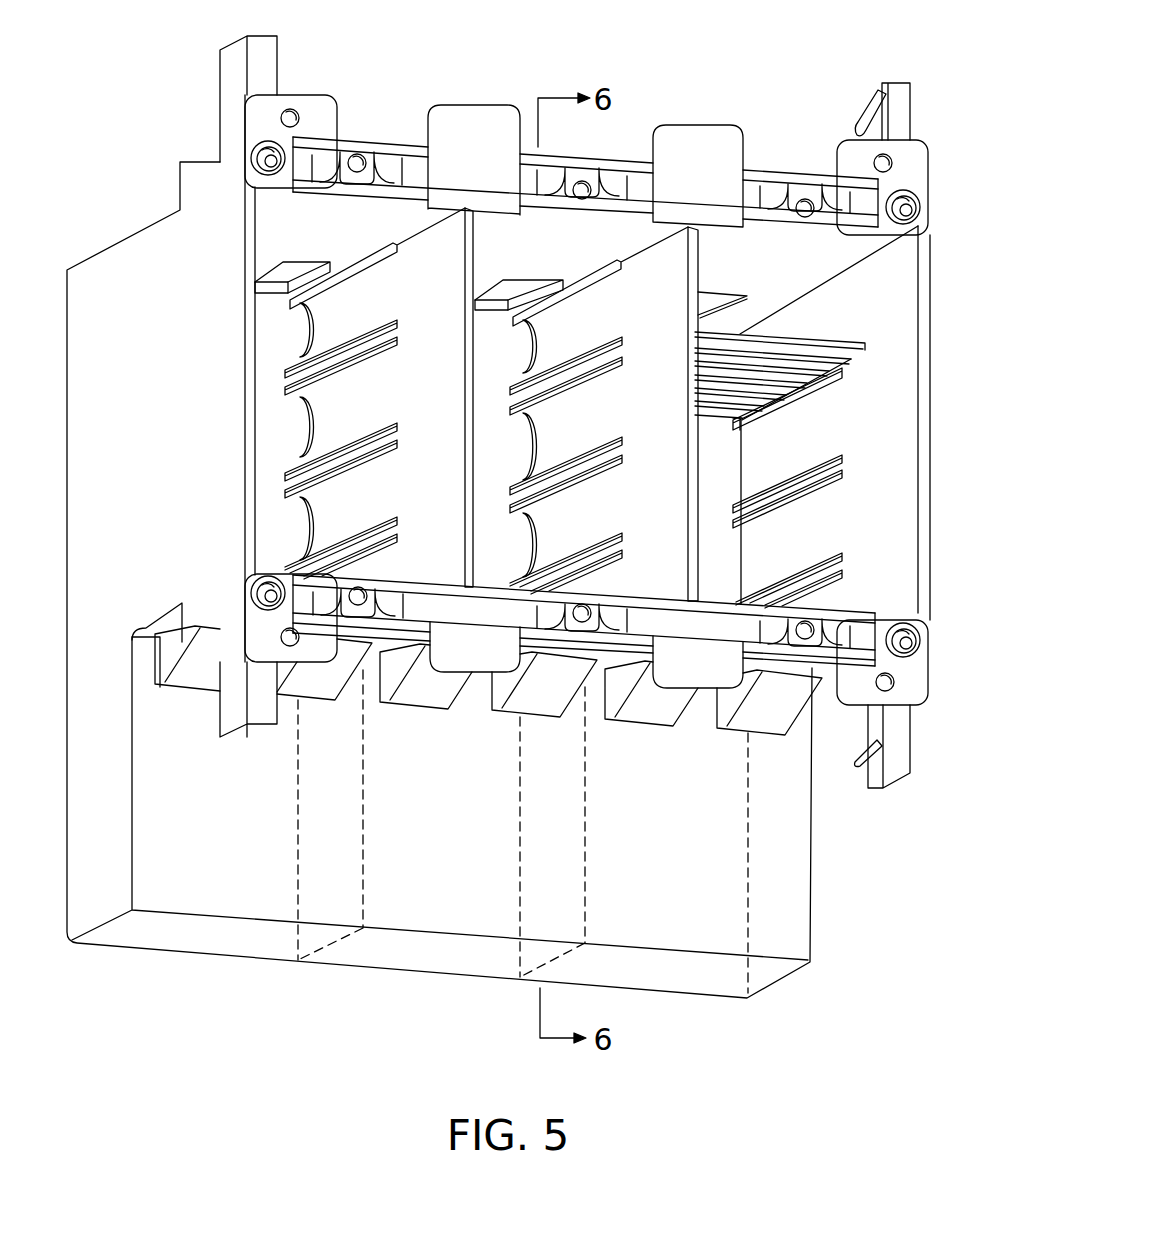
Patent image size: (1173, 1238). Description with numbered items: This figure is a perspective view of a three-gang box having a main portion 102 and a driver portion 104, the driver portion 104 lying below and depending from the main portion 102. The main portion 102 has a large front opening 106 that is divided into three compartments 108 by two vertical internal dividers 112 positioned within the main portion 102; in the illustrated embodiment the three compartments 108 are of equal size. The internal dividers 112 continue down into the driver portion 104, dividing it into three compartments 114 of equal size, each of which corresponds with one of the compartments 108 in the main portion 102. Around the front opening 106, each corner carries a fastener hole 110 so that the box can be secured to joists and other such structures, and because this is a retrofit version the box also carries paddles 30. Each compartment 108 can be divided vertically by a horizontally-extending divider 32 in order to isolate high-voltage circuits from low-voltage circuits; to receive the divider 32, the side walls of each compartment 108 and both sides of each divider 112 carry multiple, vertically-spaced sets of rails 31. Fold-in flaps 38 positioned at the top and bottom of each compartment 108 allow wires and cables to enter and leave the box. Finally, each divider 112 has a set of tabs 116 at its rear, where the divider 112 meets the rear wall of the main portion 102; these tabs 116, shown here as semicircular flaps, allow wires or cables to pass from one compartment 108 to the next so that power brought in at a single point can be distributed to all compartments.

The paddles 30 is at (860, 103).
The rails 31 is at (392, 343).
The horizontally-extending divider 32 is at (820, 339).
The fold-in flaps 38 is at (268, 275).
The main portion 102 is at (352, 138).
The driver portion 104 is at (248, 932).
The front opening 106 is at (900, 310).
The compartments 108 is at (387, 235).
The fastener hole 110 is at (262, 162).
The vertical internal dividers 112 is at (410, 567).
The compartments 114 is at (178, 902).
The tabs 116 is at (310, 328).